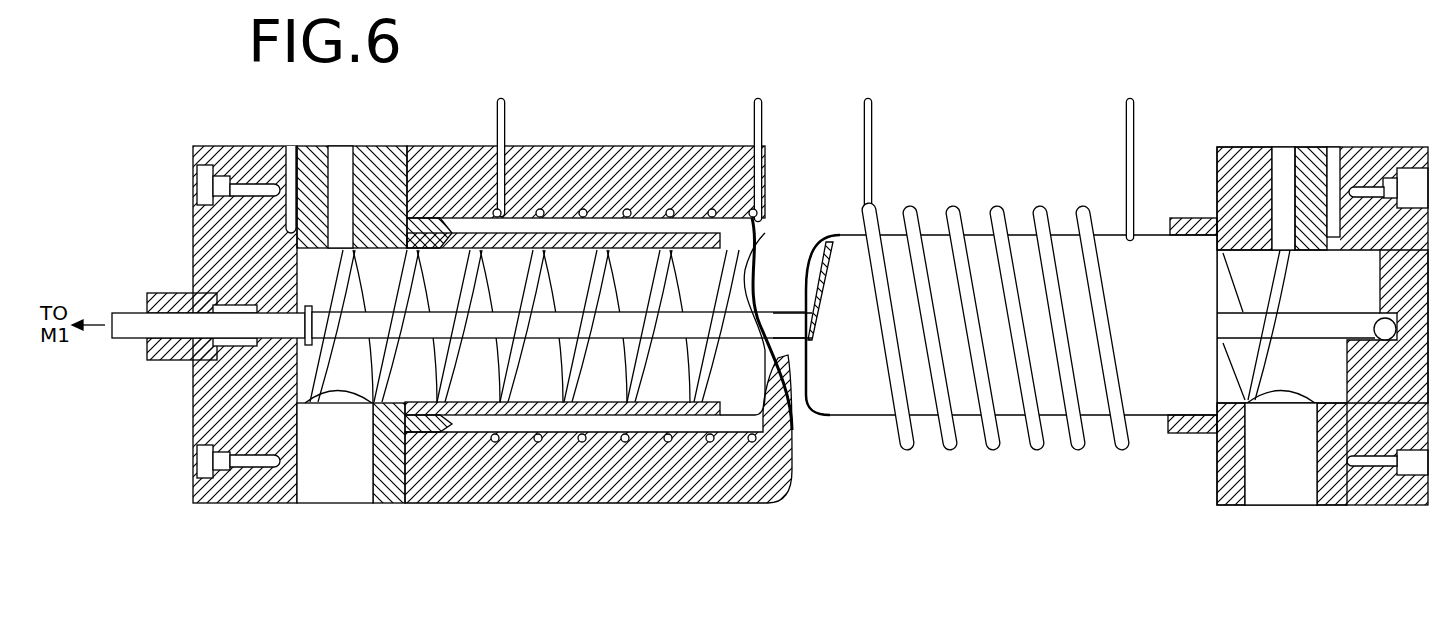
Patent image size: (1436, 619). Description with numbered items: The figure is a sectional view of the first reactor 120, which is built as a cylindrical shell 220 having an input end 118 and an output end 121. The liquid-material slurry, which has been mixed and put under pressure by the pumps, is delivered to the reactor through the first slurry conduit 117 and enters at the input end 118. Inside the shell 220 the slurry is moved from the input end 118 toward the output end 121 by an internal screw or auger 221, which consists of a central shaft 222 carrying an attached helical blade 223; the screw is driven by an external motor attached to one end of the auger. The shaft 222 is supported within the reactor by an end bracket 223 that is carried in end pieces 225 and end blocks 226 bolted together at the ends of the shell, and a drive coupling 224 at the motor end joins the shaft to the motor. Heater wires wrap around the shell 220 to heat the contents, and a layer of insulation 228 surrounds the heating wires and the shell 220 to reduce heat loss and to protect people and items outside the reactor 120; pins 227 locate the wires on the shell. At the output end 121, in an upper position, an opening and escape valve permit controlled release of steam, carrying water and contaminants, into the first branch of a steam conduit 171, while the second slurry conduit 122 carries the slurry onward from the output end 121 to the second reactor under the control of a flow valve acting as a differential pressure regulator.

The first reactor 120 is at (1037, 96).
The first slurry conduit 117 is at (1273, 485).
The input end 118 is at (1330, 382).
The output end 121 is at (300, 370).
The second slurry conduit 122 is at (330, 507).
The steam conduit 171 is at (342, 160).
The cylindrical shell 220 is at (652, 407).
The screw or auger 221 is at (547, 352).
The central shaft 222 is at (473, 332).
The helical blade 223 is at (567, 377).
The drive coupling 224 is at (147, 357).
The end piece 225 is at (210, 240).
The end block 226 is at (238, 155).
The pin 227 is at (540, 210).
The layer of insulation 228 is at (715, 490).